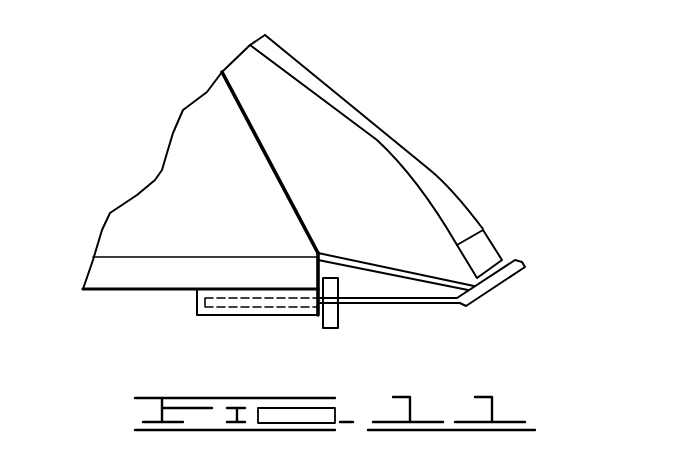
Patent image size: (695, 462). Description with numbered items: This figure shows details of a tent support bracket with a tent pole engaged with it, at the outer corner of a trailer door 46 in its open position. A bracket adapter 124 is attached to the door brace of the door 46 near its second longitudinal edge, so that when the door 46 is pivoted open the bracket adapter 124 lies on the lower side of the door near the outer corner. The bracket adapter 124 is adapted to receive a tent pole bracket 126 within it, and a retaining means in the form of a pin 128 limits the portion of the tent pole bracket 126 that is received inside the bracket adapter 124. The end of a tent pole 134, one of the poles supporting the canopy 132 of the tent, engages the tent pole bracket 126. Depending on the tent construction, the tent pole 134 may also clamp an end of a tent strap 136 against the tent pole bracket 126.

The door 46 is at (138, 273).
The bracket adapter 124 is at (198, 313).
The tent pole bracket 126 is at (440, 305).
The pin 128 is at (337, 329).
The canopy 132 is at (212, 158).
The tent pole 134 is at (357, 98).
The tent strap 136 is at (383, 263).